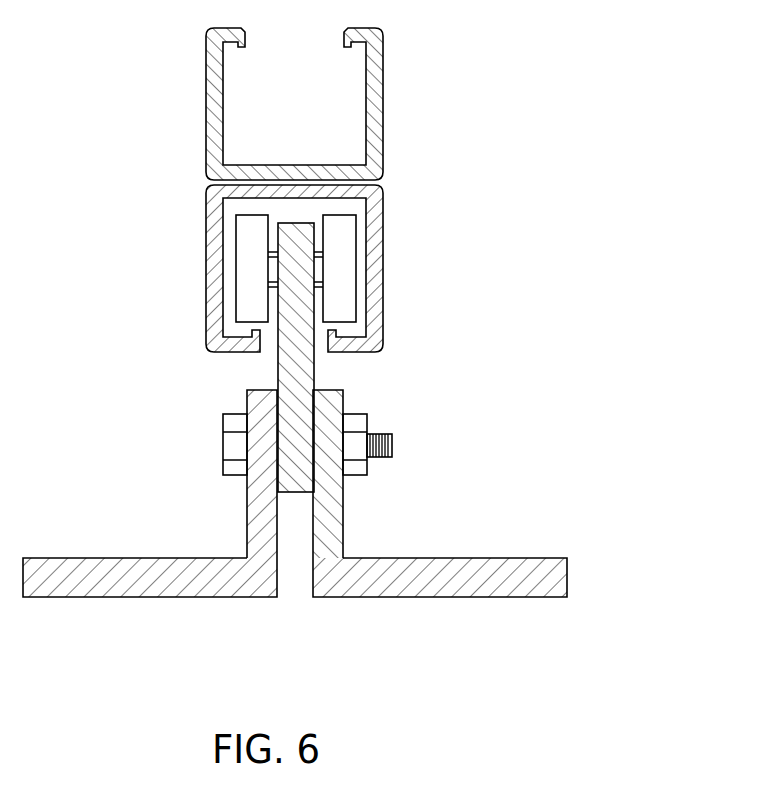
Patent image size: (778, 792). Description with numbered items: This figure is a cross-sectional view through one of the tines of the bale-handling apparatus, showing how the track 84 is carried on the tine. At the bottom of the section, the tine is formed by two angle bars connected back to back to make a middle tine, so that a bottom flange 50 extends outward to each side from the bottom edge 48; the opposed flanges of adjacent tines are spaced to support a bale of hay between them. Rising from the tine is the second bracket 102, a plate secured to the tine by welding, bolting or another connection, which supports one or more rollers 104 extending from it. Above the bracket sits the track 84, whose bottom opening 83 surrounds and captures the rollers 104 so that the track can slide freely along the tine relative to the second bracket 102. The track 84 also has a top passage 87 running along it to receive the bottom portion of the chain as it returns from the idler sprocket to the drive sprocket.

The track 84 is at (339, 104).
The top passage 87 is at (360, 110).
The bottom opening 83 is at (245, 210).
The roller 104 is at (345, 253).
The second bracket 102 is at (278, 362).
The bottom edge 48 is at (313, 597).
The bottom flange 50 is at (97, 597).